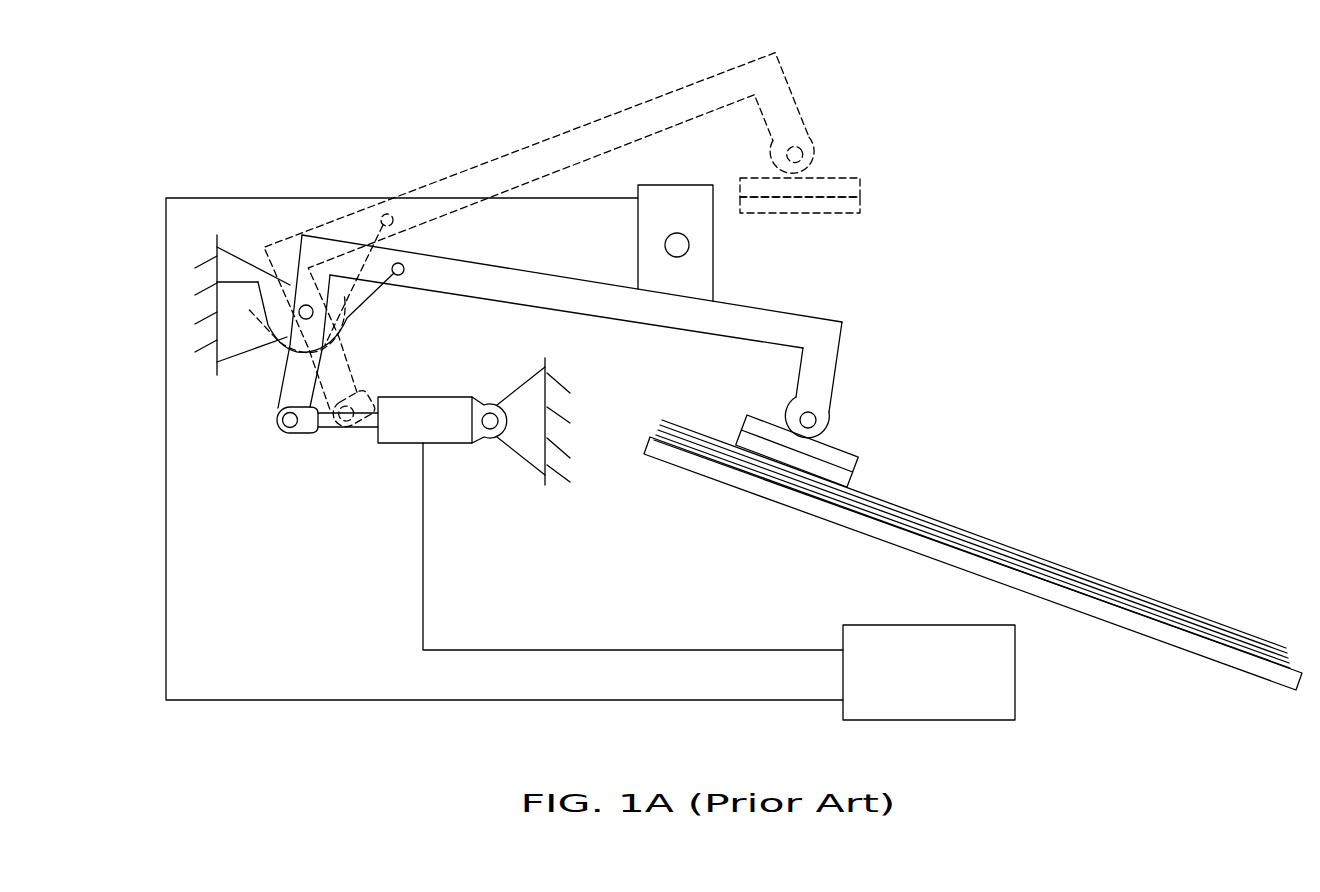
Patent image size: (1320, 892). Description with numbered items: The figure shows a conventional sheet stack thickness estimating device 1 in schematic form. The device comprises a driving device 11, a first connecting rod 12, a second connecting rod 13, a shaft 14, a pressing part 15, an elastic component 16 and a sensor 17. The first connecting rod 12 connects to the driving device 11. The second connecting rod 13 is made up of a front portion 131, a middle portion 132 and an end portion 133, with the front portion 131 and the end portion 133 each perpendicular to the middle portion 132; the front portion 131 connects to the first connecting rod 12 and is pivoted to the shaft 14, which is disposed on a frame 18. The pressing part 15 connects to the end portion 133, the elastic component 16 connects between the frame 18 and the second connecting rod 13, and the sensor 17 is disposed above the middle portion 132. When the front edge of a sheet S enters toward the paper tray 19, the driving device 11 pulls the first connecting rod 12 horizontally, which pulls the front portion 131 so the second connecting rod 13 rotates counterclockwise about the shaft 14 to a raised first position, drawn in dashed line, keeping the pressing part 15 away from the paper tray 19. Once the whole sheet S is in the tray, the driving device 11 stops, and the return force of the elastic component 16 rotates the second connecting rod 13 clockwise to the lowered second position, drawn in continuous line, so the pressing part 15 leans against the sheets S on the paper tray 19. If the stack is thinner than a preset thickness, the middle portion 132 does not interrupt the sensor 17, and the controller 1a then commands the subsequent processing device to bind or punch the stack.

The sheet stack thickness estimating device 1 is at (1079, 141).
The controller 1a is at (932, 640).
The driving device 11 is at (405, 410).
The first connecting rod 12 is at (305, 427).
The second connecting rod 13 is at (560, 231).
The front portion 131 is at (287, 380).
The middle portion 132 is at (530, 282).
The end portion 133 is at (818, 377).
The shaft 14 is at (303, 303).
The pressing part 15 is at (835, 457).
The elastic component 16 is at (267, 325).
The sensor 17 is at (698, 270).
The frame 18 is at (213, 277).
The paper tray 19 is at (1218, 655).
The sheet S is at (1047, 557).